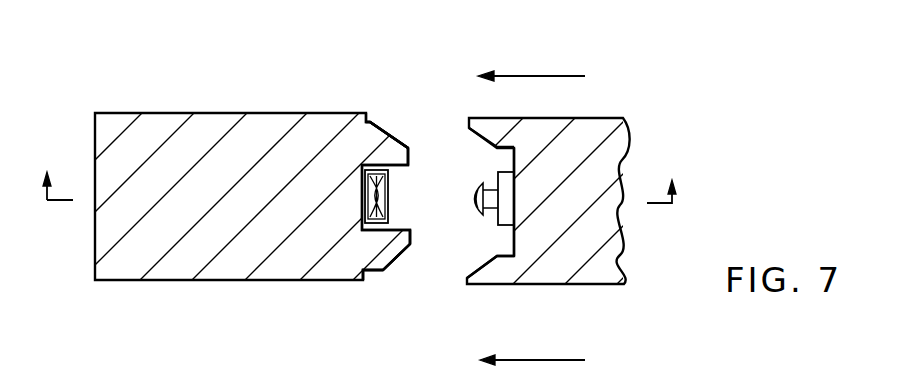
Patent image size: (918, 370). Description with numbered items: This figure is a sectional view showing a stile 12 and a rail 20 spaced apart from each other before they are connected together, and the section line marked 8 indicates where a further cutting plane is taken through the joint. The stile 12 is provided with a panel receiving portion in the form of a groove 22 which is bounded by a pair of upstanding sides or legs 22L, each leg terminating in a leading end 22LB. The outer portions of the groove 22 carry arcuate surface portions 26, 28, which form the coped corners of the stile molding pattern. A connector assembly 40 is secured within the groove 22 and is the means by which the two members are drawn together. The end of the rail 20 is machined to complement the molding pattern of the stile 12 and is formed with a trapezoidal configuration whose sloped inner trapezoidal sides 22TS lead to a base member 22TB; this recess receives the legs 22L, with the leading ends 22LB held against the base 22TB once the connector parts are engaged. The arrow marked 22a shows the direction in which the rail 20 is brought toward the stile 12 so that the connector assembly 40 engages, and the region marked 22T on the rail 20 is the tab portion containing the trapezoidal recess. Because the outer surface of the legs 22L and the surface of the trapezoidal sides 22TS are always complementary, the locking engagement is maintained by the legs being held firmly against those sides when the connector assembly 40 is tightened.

The vertical side stile 12 is at (147, 112).
The rail 20 is at (672, 127).
The groove 22 is at (358, 212).
The engagement direction 22a is at (486, 164).
The legs 22L is at (400, 152).
The leading end 22LB is at (411, 148).
The connector tab 22T is at (514, 236).
The base member 22TB is at (517, 158).
The trapezoidal sides 22TS is at (500, 258).
The arcuate surface portion 26 is at (385, 271).
The arcuate surface portion 28 is at (387, 130).
The connector assembly 40 is at (363, 170).
The section line 8- 8 is at (359, 205).